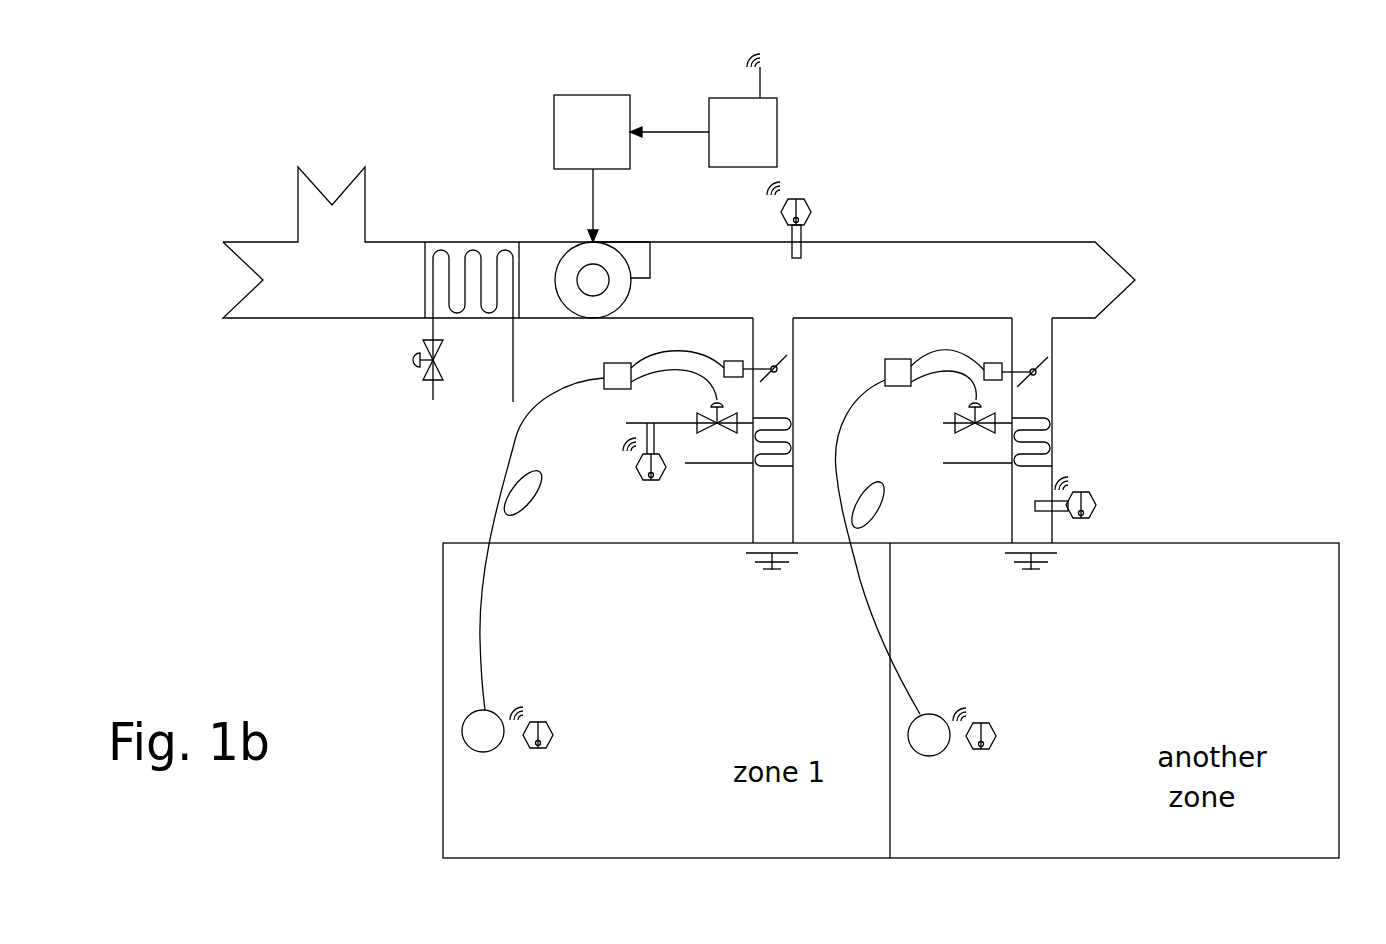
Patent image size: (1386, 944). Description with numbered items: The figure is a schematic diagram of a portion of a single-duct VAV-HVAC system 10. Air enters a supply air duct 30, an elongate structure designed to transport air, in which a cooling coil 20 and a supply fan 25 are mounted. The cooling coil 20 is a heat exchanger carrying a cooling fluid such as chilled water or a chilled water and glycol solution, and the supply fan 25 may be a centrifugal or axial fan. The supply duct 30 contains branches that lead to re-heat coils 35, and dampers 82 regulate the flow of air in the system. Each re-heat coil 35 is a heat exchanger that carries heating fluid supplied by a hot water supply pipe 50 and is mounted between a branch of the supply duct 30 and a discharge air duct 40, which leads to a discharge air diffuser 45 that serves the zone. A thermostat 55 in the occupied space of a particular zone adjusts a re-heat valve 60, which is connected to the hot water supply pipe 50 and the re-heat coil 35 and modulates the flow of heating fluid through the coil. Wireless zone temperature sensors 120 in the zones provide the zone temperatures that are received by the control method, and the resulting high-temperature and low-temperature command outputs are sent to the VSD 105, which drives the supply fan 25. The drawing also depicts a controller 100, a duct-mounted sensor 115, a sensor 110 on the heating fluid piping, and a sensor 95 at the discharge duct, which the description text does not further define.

The single-duct VAV-HVAC system 10 is at (477, 453).
The cooling coil 20 is at (430, 242).
The supply fan 25 is at (563, 257).
The supply air duct 30 is at (889, 242).
The re-heat coil 35 is at (793, 458).
The discharge air duct 40 is at (752, 487).
The discharge air diffuser 45 is at (787, 563).
The hot water supply pipe 50 is at (663, 420).
The thermostat 55 is at (490, 753).
The re-heat valve 60 is at (730, 420).
The damper 82 is at (1036, 364).
The wireless duct sensor 95 is at (1097, 503).
The controller 100 is at (777, 118).
The VSD 105 is at (588, 93).
The wireless water temperature sensor 110 is at (647, 479).
The wireless duct pressure sensor 115 is at (807, 197).
The wireless zone temperature sensor 120 is at (548, 747).